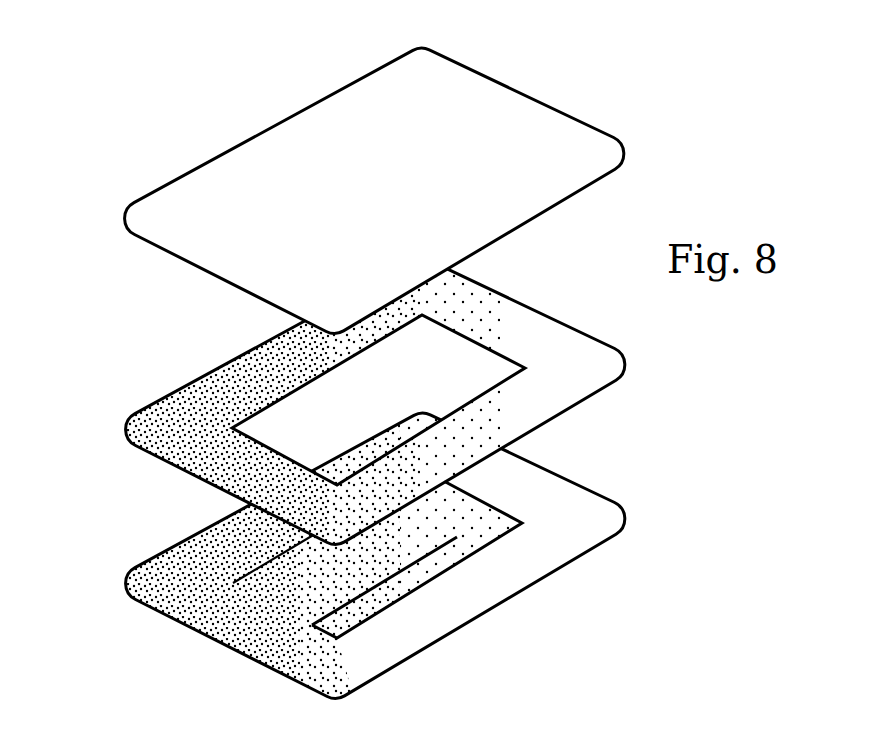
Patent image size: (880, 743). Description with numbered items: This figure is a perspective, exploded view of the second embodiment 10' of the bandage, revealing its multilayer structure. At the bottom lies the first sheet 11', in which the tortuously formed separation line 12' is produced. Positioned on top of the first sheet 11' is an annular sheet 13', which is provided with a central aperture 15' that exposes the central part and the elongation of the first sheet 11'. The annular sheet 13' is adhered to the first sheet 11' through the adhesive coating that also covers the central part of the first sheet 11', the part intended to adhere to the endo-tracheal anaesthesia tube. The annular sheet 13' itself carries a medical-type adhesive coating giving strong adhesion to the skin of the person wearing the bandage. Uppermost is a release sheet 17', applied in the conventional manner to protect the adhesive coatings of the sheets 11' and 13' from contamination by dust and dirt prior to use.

The second embodiment of the bandage 10' is at (90, 298).
The first sheet 11' is at (413, 525).
The tortuously formed separation line 12' is at (417, 582).
The annular sheet 13' is at (375, 401).
The central aperture 15' is at (433, 400).
The release sheet 17' is at (374, 190).